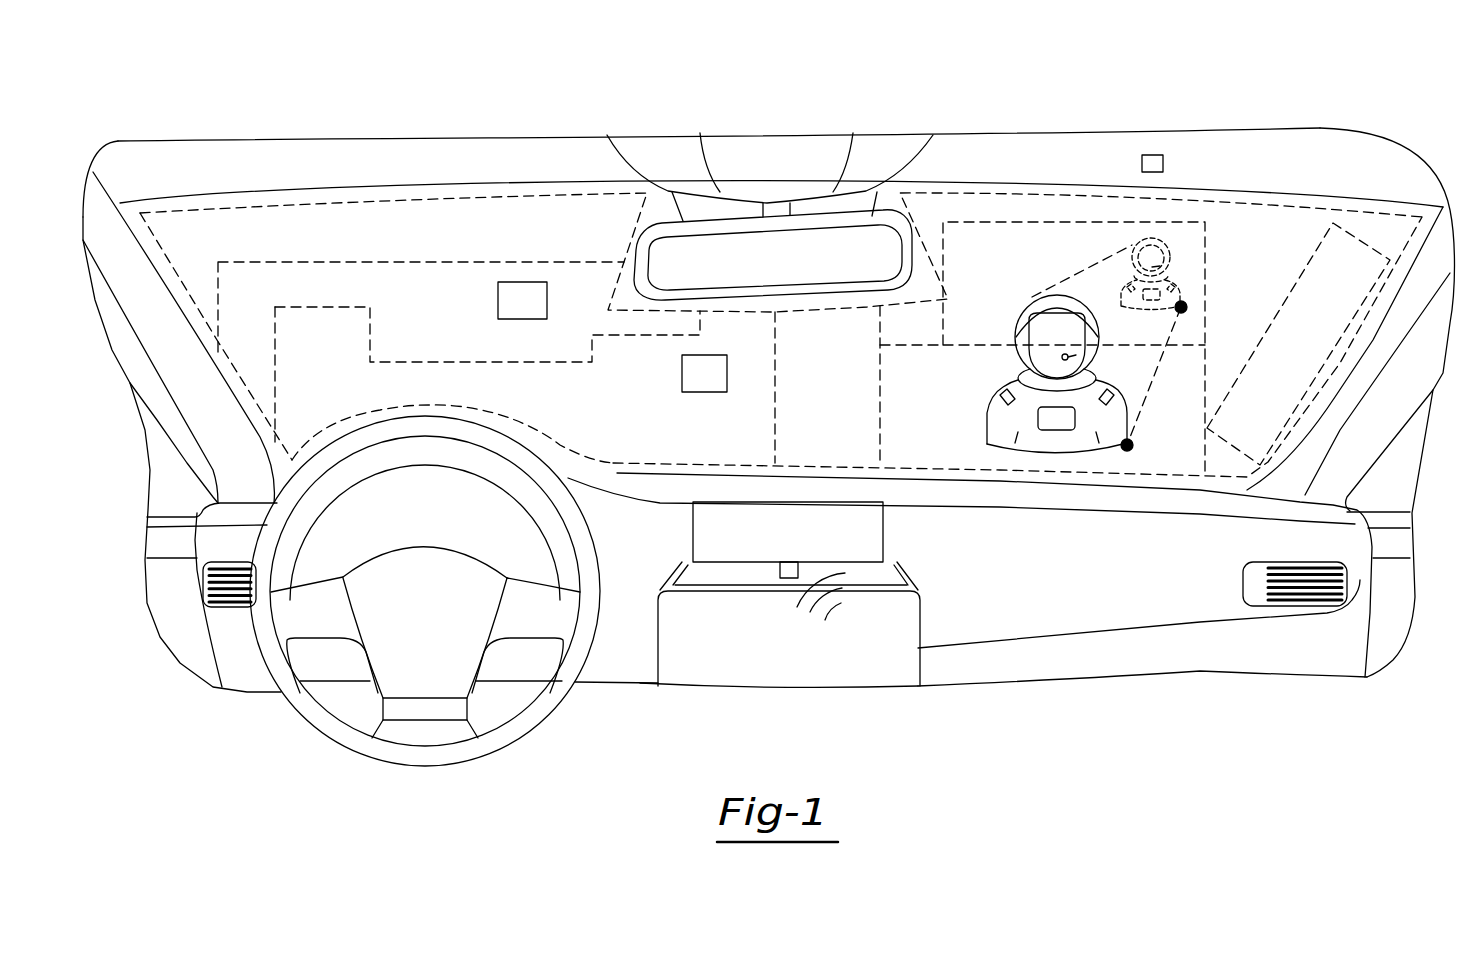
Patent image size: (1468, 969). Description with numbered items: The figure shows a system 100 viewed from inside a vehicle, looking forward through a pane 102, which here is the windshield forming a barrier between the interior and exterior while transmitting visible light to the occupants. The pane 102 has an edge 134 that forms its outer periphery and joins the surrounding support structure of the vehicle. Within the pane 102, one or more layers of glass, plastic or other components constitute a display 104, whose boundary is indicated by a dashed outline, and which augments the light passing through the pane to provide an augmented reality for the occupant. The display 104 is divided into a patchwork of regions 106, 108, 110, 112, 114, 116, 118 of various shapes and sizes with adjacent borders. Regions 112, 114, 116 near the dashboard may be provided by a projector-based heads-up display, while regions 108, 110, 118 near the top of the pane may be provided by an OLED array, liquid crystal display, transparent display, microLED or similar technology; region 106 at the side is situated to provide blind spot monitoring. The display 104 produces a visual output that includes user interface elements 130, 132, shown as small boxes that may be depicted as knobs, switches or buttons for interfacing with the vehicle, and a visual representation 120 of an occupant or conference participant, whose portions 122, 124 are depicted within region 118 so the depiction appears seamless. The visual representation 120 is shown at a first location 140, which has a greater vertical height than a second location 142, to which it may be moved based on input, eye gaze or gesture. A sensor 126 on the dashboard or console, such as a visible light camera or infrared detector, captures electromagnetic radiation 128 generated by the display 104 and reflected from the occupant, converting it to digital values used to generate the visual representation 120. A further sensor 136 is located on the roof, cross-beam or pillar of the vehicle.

The system 100 is at (762, 122).
The pane 102 is at (275, 195).
The display 104 is at (405, 188).
The region 106 is at (1319, 357).
The region 108 is at (501, 244).
The region 110 is at (434, 344).
The region 112 is at (639, 407).
The region 114 is at (841, 407).
The region 116 is at (933, 407).
The region 118 is at (1011, 274).
The visual representation 120 is at (1081, 467).
The portion of visual representation 122 is at (1032, 295).
The portion of visual representation 124 is at (1003, 422).
The sensor 126 is at (779, 573).
The electromagnetic radiation 128 is at (827, 610).
The user interface element 130 is at (498, 290).
The user interface element 132 is at (690, 393).
The edge 134 is at (513, 182).
The sensor 136 is at (1157, 153).
The first location 140 is at (1127, 445).
The second location 142 is at (1181, 307).